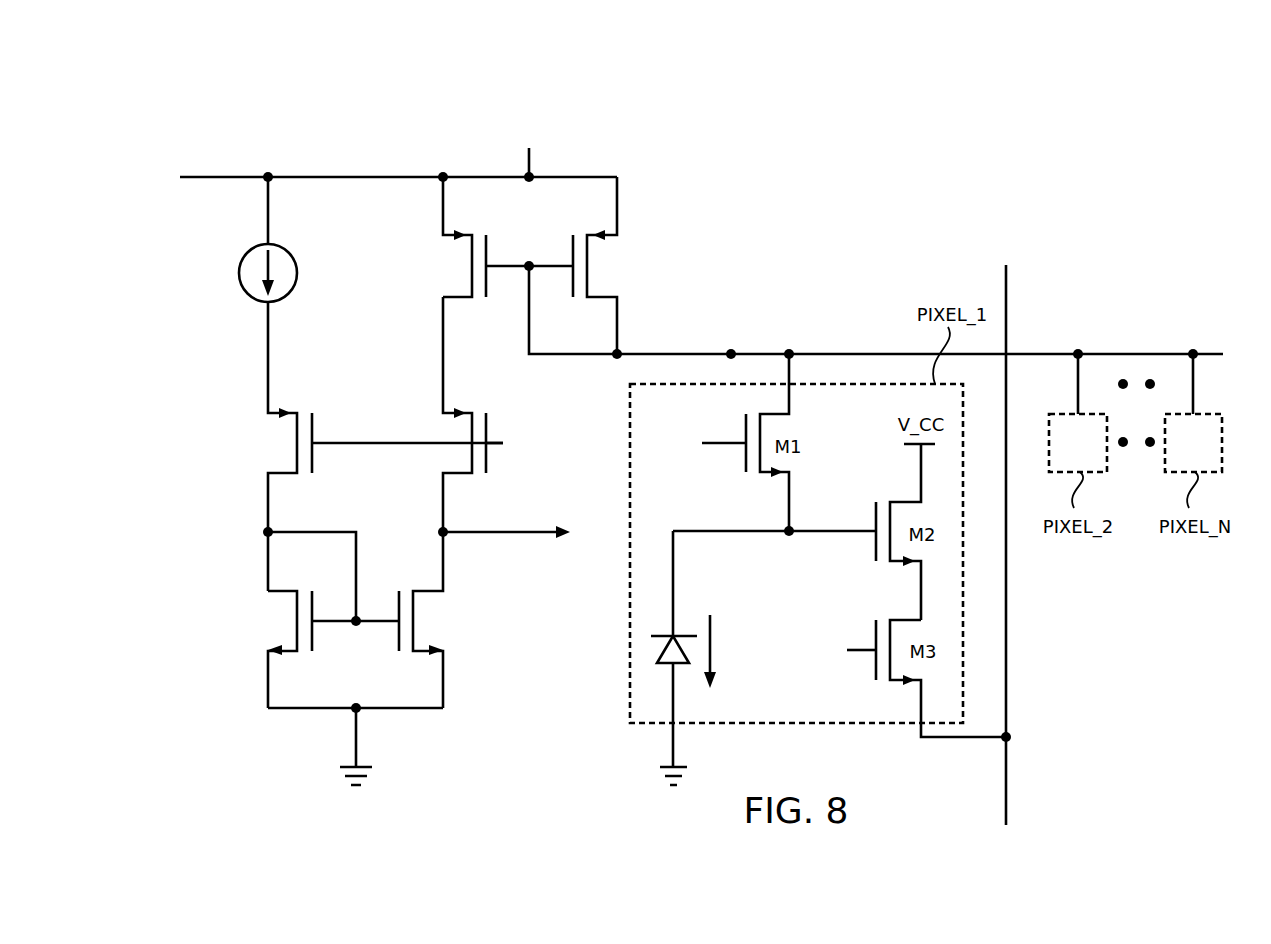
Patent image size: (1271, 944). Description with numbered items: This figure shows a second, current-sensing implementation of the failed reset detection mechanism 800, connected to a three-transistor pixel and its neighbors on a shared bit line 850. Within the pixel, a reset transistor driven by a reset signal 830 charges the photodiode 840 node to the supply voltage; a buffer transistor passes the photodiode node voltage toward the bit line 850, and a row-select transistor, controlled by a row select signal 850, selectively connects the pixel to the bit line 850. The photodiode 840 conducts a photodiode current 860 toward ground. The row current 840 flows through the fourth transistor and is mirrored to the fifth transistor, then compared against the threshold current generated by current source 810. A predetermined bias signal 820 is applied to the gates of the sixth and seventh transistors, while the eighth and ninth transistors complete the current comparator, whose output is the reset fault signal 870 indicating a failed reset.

The failed reset detection mechanism 800 is at (405, 443).
The current source 810 is at (226, 239).
The bias signal 820 is at (530, 443).
The reset signal 830 is at (699, 442).
The row current 840 is at (705, 339).
The bit line / row select signal 850 is at (911, 526).
The I_PD photodiode current 860 is at (753, 651).
The reset fault signal 870 is at (506, 556).